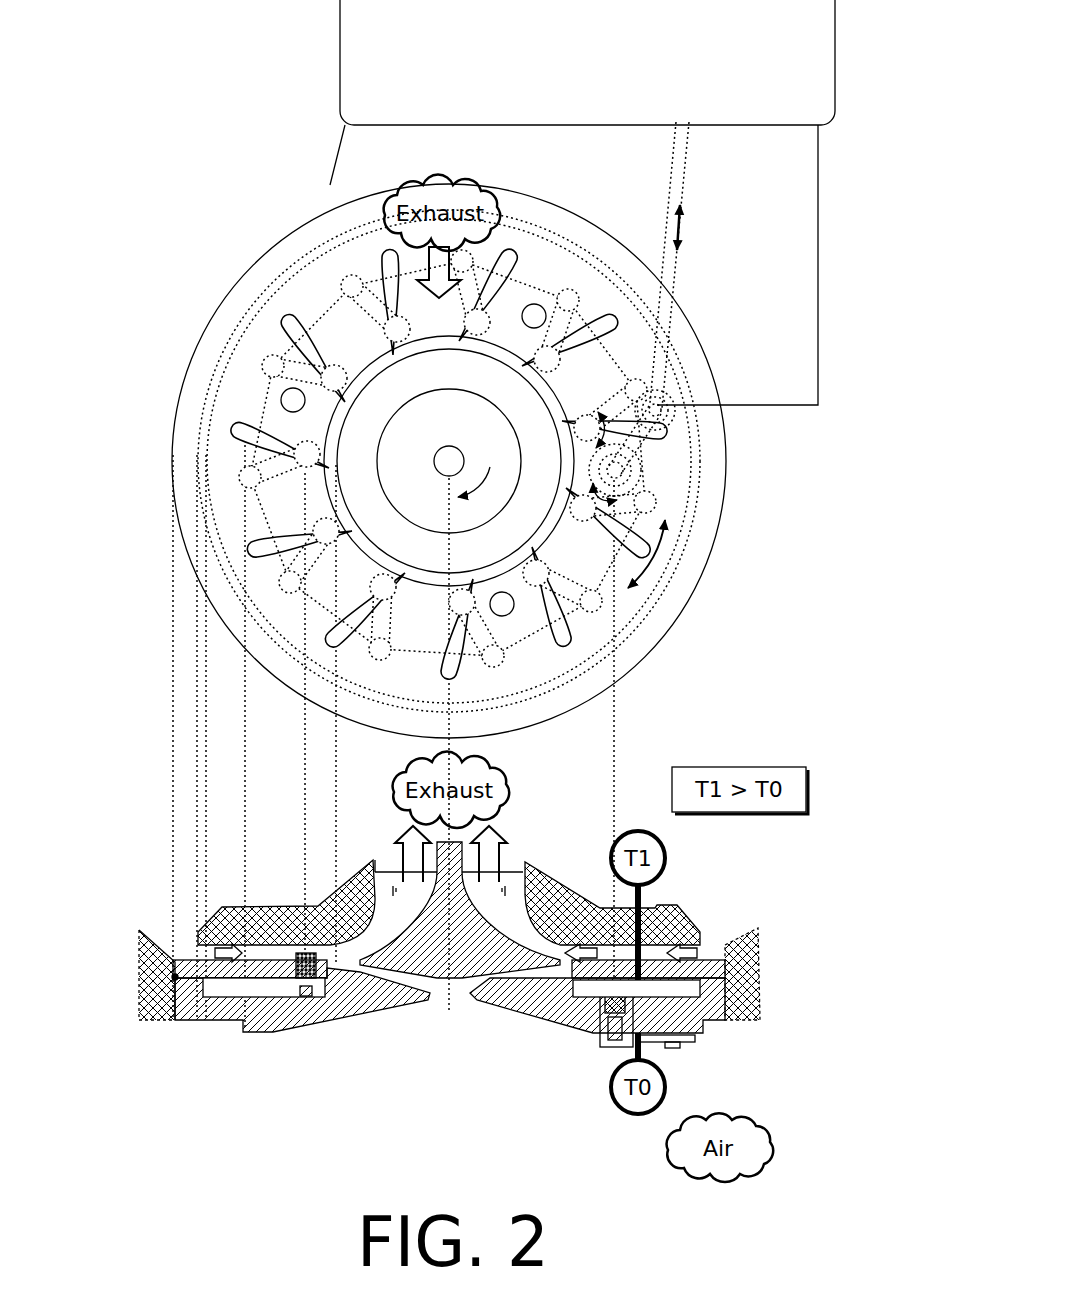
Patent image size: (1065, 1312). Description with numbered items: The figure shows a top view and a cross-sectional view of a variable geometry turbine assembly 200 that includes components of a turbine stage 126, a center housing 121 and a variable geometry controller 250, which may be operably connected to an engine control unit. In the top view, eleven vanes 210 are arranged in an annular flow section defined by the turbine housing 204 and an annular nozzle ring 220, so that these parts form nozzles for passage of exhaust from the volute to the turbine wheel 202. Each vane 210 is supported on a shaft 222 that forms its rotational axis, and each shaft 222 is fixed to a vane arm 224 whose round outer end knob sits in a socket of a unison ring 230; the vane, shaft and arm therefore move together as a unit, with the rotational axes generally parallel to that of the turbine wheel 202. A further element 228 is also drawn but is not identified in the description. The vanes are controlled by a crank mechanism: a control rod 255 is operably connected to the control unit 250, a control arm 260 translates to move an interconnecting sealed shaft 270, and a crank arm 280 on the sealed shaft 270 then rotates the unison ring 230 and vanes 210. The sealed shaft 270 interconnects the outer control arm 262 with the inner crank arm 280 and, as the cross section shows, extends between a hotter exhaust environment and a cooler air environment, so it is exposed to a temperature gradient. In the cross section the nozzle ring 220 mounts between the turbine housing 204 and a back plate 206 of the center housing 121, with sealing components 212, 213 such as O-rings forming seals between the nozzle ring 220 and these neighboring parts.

The assembly 200 is at (150, 24).
The turbine stage 126 is at (195, 190).
The variable geometry controller 250 is at (565, 57).
The center housing 121 is at (640, 652).
The turbine wheel 202 is at (430, 438).
The annular nozzle ring 220 is at (262, 430).
The vane arm 224 is at (298, 450).
The pin 228 is at (285, 392).
The vane 210 is at (250, 437).
The control rod 255 is at (673, 263).
The control arm 260 is at (668, 415).
The sealed shaft 270 is at (630, 468).
The crank arm 280 is at (643, 473).
The unison ring 230 is at (677, 502).
The turbine housing 204 is at (217, 920).
The sealing component 213 is at (175, 977).
The sealing component 212 is at (328, 990).
The back plate 206 is at (320, 1023).
The shaft 222 is at (303, 992).
The outer control arm 262 is at (683, 1043).